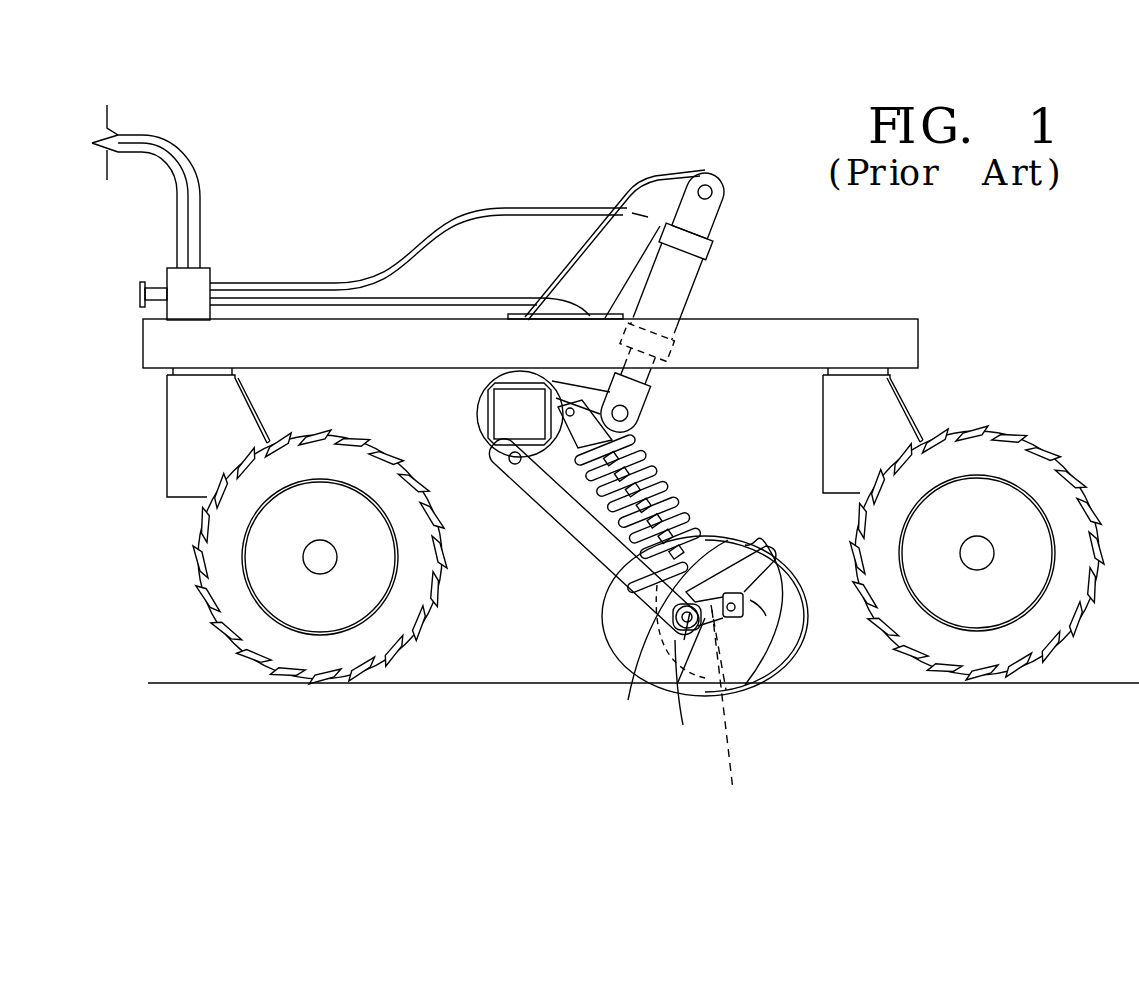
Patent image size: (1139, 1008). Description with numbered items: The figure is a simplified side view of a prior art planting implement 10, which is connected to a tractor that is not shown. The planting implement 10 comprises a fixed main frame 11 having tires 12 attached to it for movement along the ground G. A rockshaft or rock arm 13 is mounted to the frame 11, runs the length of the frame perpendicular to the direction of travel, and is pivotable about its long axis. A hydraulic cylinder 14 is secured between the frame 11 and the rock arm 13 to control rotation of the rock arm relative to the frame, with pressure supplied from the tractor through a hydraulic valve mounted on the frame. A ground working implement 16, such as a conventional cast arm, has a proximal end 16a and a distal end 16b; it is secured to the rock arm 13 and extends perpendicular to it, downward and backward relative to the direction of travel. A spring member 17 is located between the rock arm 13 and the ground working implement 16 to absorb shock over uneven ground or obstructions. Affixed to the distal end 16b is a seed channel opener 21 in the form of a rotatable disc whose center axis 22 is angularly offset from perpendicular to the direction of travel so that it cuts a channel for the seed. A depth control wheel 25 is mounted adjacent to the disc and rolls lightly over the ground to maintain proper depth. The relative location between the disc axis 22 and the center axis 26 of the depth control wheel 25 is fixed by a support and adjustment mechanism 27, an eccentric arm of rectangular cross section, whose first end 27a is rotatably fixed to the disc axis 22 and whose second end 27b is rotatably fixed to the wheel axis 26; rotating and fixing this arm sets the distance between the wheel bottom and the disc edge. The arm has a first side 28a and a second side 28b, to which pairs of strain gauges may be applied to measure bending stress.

The planting implement 10 is at (331, 155).
The fixed main frame 11 is at (862, 319).
The tires 12 is at (980, 432).
The rockshaft or rock arm 13 is at (518, 387).
The hydraulic cylinder 14 is at (693, 285).
The ground working implement 16 is at (554, 564).
The proximal end 16a is at (488, 447).
The distal end 16b is at (676, 622).
The spring member 17 is at (650, 473).
The seed channel opener 21 is at (688, 690).
The center axis of the disc 22 is at (680, 598).
The depth control wheel 25 is at (748, 620).
The center axis of the depth control wheel 26 is at (713, 535).
The support and adjustment mechanism 27 is at (733, 630).
The first end 27a is at (690, 612).
The second end 27b is at (760, 602).
The first side 28a is at (683, 725).
The second side 28b is at (733, 790).
The ground G is at (520, 686).